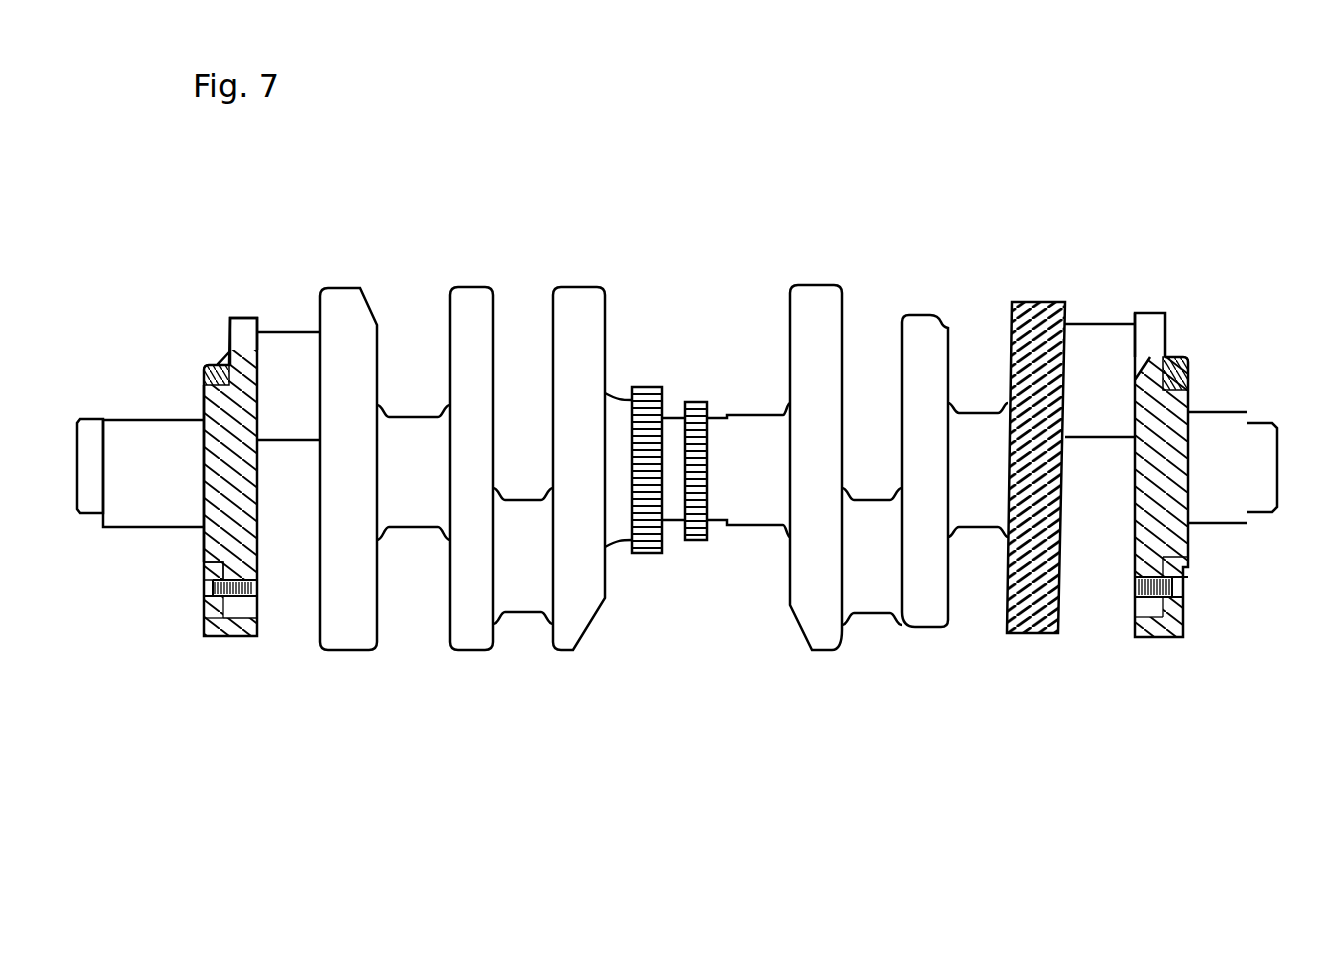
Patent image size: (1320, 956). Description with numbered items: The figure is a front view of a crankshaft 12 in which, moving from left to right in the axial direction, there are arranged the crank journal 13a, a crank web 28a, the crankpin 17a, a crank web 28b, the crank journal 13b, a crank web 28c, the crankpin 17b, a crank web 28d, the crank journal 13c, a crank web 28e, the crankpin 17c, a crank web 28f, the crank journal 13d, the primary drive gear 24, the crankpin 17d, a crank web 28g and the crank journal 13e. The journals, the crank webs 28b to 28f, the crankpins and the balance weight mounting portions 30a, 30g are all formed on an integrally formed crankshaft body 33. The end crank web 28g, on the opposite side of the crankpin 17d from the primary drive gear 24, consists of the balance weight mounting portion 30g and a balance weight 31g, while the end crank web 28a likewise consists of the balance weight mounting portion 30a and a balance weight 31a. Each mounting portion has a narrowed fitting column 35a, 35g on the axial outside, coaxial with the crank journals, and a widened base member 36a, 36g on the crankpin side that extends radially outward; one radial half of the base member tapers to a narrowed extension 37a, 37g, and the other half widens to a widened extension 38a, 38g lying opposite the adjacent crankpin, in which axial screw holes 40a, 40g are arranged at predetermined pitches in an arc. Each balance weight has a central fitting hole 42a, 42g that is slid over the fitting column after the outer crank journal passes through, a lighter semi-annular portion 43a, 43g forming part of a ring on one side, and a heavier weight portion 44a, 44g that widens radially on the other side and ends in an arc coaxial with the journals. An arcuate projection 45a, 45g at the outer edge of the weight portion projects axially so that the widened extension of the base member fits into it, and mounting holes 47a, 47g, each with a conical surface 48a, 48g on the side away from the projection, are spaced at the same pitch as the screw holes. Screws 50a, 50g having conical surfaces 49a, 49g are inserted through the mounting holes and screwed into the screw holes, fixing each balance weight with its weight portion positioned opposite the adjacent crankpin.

The crankshaft 12 is at (157, 217).
The crankshaft body 33 is at (88, 420).
The crank journal 13a is at (155, 418).
The crank journal 13b is at (411, 417).
The crank journal 13c is at (752, 415).
The crank journal 13d is at (975, 410).
The crank journal 13e is at (1217, 412).
The crankpin 17a is at (289, 332).
The crankpin 17b is at (522, 612).
The crankpin 17c is at (866, 614).
The crankpin 17d is at (1093, 322).
The primary drive gear 24 is at (1030, 633).
The crank web 28a is at (230, 636).
The crank web 28b is at (345, 650).
The crank web 28c is at (472, 287).
The crank web 28d is at (585, 287).
The crank web 28e is at (817, 286).
The crank web 28f is at (912, 315).
The crank web 28g is at (1163, 640).
The balance weight mounting portion 30a is at (212, 468).
The balance weight mounting portion 30g is at (1188, 453).
The balance weight 31a is at (213, 636).
The balance weight 31g is at (1168, 640).
The fitting column 35a is at (204, 538).
The fitting column 35g is at (1172, 532).
The base member 36a is at (240, 560).
The base member 36g is at (1185, 573).
The narrowed extension 37a is at (243, 318).
The narrowed extension 37g is at (1150, 322).
The widened extension 38a is at (238, 636).
The widened extension 38g is at (1147, 640).
The screw holes 40a is at (254, 590).
The screw holes 40g is at (1132, 592).
The fitting hole 42a is at (205, 390).
The fitting hole 42g is at (1187, 390).
The semi-annular portion 43a is at (212, 365).
The semi-circular portion 43g is at (1175, 357).
The weight portion 44a is at (206, 618).
The weight portion 44g is at (1180, 640).
The arcuate projection 45a is at (257, 632).
The arcuate projection 45g is at (1157, 640).
The mounting holes 47a is at (205, 565).
The mounting holes 47g is at (1185, 590).
The conical surface 48a is at (204, 587).
The conical surface 48g is at (1185, 600).
The conical surface 49a is at (204, 600).
The conical surface 49g is at (1183, 640).
The screws 50a is at (254, 585).
The screws 50g is at (1135, 583).